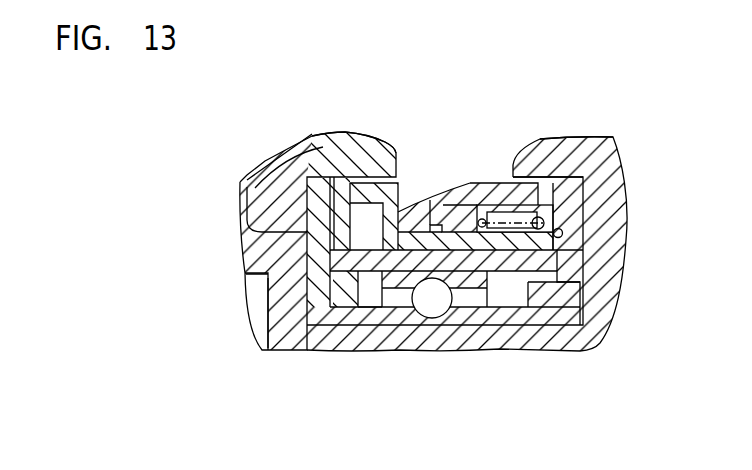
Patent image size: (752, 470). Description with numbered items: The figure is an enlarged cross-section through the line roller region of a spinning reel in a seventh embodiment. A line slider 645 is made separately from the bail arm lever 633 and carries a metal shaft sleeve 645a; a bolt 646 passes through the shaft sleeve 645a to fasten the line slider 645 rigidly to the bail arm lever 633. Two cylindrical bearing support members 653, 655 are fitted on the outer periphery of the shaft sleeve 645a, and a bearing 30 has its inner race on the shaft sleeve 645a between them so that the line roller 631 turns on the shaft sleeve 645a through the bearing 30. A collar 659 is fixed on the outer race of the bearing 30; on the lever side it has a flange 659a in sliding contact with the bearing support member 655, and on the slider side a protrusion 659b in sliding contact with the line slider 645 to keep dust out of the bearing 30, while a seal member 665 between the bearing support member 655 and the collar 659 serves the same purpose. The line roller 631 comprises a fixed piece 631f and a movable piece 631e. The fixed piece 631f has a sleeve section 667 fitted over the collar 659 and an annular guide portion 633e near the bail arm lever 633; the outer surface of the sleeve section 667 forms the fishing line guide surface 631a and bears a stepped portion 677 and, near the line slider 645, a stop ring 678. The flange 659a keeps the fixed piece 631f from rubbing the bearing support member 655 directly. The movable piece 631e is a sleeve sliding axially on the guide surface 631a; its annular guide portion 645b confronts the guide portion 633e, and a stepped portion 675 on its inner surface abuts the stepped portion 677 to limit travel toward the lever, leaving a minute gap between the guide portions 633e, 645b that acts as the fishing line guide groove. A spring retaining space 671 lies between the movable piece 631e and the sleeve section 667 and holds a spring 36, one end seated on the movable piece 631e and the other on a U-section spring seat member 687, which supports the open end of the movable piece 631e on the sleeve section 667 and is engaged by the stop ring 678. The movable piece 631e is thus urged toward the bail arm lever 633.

The bearing 30 is at (455, 330).
The spring 36 is at (547, 187).
The line roller 631 is at (430, 146).
The fishing line guide surface 631a is at (368, 315).
The movable piece 631e is at (592, 133).
The fixed piece 631f is at (323, 147).
The bail arm lever 633 is at (262, 273).
The annular guide portion 633e is at (412, 203).
The line slider 645 is at (610, 318).
The metal shaft sleeve 645a is at (464, 350).
The annular guide portion 645b is at (414, 215).
The bolt 646 is at (238, 322).
The cylindrical bearing support member 653 is at (570, 265).
The cylindrical bearing support member 655 is at (325, 330).
The collar 659 is at (507, 263).
The flange 659a is at (267, 166).
The protrusion 659b is at (562, 277).
The seal member 665 is at (278, 356).
The sleeve section 667 is at (562, 243).
The spring retaining space 671 is at (475, 200).
The stepped portion 675 is at (455, 200).
The stepped portion 677 is at (433, 318).
The stop ring 678 is at (564, 233).
The spring seat member 687 is at (562, 206).